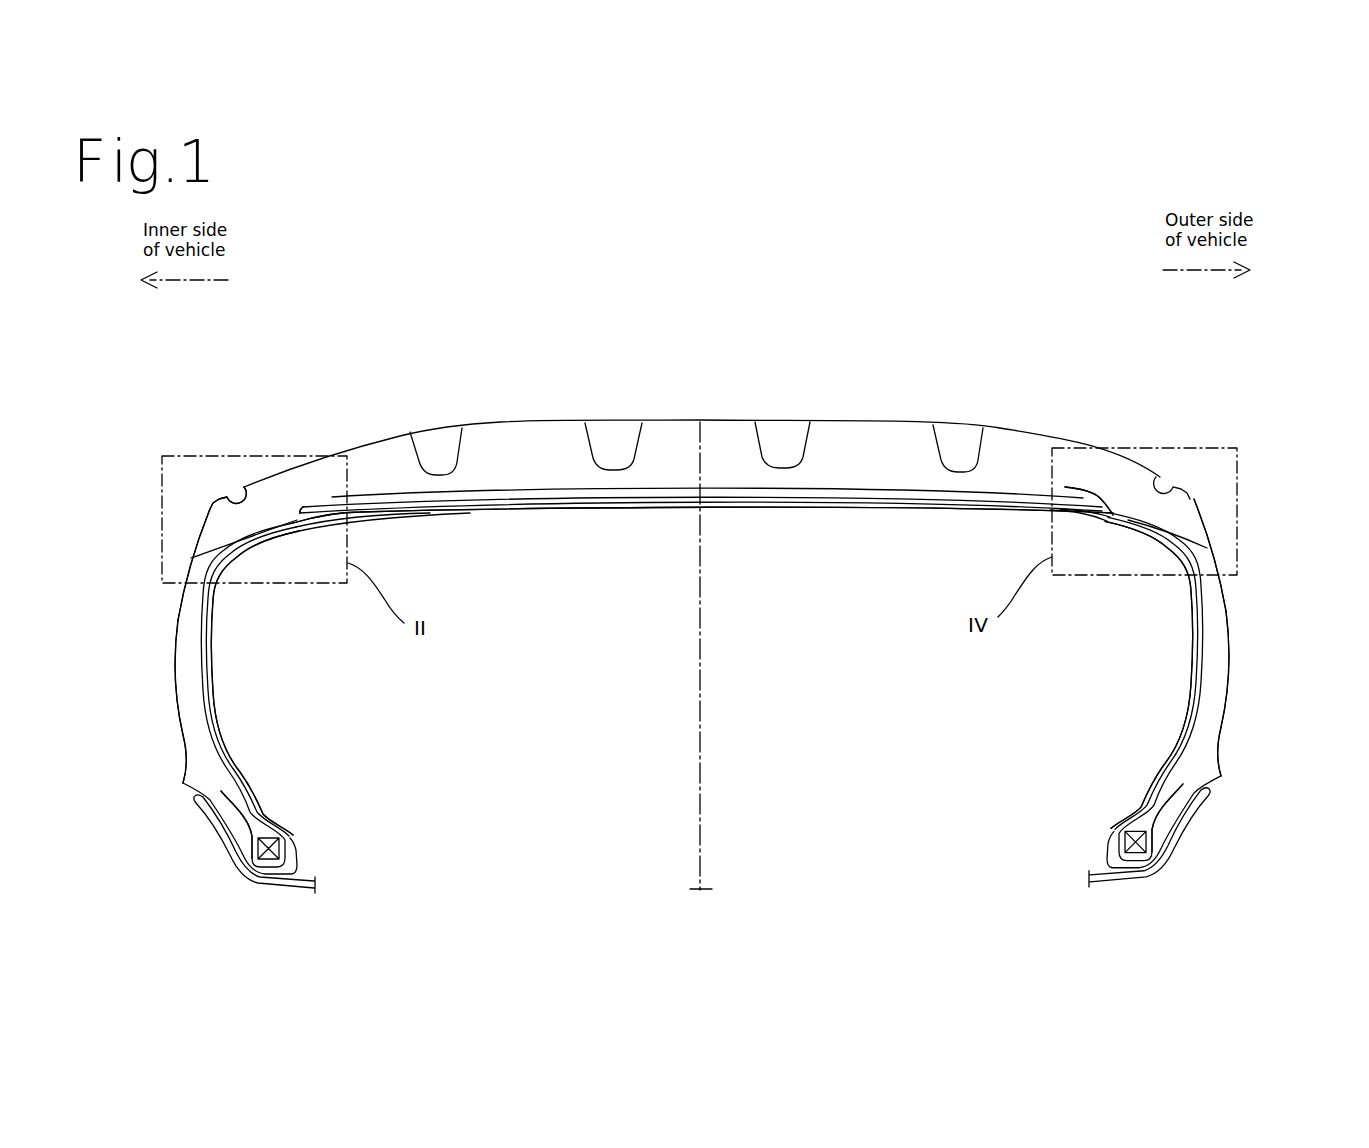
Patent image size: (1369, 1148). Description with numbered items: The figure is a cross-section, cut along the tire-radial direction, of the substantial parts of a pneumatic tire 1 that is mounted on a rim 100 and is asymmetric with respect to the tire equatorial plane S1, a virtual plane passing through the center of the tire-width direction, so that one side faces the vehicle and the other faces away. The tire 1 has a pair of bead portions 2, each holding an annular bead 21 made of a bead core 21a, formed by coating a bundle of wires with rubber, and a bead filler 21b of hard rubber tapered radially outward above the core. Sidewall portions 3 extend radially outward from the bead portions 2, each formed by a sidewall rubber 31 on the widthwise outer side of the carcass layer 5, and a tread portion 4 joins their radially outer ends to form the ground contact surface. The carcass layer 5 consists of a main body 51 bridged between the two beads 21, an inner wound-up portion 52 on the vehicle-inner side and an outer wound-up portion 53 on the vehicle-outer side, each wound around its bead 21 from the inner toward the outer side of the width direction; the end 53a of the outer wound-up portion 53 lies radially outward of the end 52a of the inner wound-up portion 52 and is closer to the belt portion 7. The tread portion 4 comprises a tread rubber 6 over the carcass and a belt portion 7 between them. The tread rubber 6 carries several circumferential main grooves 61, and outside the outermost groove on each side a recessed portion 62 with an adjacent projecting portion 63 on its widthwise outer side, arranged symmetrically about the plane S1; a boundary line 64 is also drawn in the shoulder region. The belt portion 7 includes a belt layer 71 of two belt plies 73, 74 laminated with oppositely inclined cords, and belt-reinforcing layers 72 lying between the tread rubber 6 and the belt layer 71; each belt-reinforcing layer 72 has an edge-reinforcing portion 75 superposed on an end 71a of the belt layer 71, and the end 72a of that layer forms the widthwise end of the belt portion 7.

The pneumatic tire 1 is at (915, 252).
The bead portion 2 is at (186, 877).
The sidewall portion 3 is at (160, 609).
The tread portion 4 is at (703, 308).
The carcass layer 5 is at (535, 514).
The tread rubber 6 is at (729, 418).
The belt portion 7 is at (537, 491).
The bead 21 is at (400, 792).
The bead core 21a is at (280, 847).
The bead filler 21b is at (258, 812).
The sidewall rubber 31 is at (176, 634).
The main body 51 is at (610, 516).
The inner wound-up portion 52 is at (204, 678).
The end of the inner wound-up portion 52a is at (265, 536).
The outer wound-up portion 53 is at (1205, 668).
The end of the outer wound-up portion 53a is at (1128, 524).
The main groove 61 is at (437, 446).
The recessed portion 62 is at (235, 488).
The projecting portion 63 is at (205, 504).
The boundary between tread rubber and sidewall rubber 64 is at (192, 556).
The belt layer 71 is at (747, 600).
The end of the belt layer 71a is at (297, 532).
The belt-reinforcing layer 72 is at (333, 478).
The end of the belt-reinforcing layer 72a is at (1140, 436).
The belt ply 73 is at (787, 510).
The belt ply 74 is at (825, 496).
The edge-reinforcing portion 75 is at (313, 497).
The rim 100 is at (279, 887).
The tire equatorial plane S1 is at (700, 822).